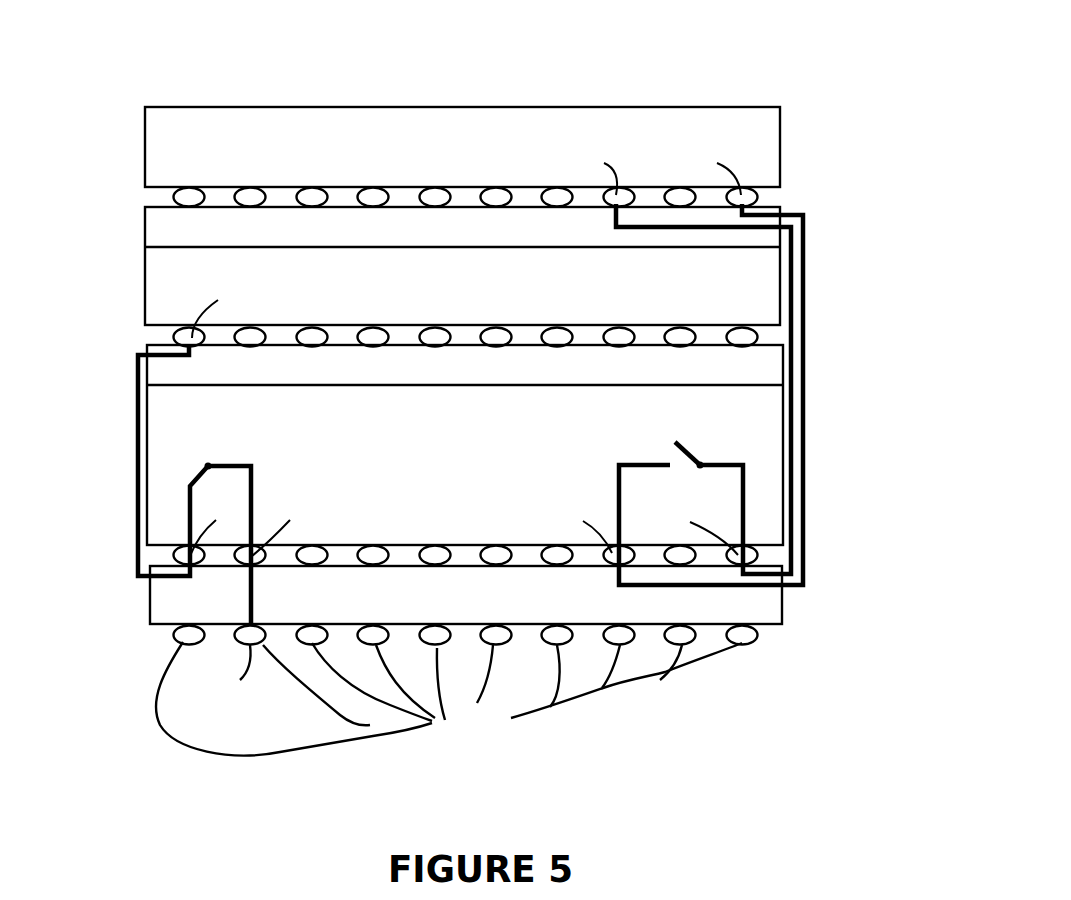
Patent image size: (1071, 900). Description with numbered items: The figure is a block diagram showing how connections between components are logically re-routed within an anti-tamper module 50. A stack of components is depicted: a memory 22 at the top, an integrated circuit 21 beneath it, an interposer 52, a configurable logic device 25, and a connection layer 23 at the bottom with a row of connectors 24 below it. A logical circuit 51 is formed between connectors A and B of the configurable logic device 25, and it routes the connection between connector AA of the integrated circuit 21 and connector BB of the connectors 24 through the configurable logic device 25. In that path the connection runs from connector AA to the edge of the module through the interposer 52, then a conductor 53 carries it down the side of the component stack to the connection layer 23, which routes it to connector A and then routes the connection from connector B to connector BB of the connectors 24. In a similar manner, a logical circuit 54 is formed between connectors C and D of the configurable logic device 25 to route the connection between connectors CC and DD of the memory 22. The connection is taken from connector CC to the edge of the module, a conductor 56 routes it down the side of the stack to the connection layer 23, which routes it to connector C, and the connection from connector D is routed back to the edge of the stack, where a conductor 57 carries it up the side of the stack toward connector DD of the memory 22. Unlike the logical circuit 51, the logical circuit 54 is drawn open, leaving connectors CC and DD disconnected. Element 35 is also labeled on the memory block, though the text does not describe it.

The anti-tamper module 50 is at (796, 21).
The memory 35 is at (181, 142).
The memory 22 is at (766, 157).
The integrated circuit 21 is at (172, 283).
The interposer 52 is at (182, 368).
The configurable logic device 25 is at (417, 455).
The conductor 53 is at (138, 527).
The logical circuit 51 is at (252, 472).
The logical circuit 54 is at (730, 460).
The conductor 56 is at (796, 276).
The conductor 57 is at (806, 386).
The connection layer 23 is at (770, 610).
The connectors 24 is at (449, 699).